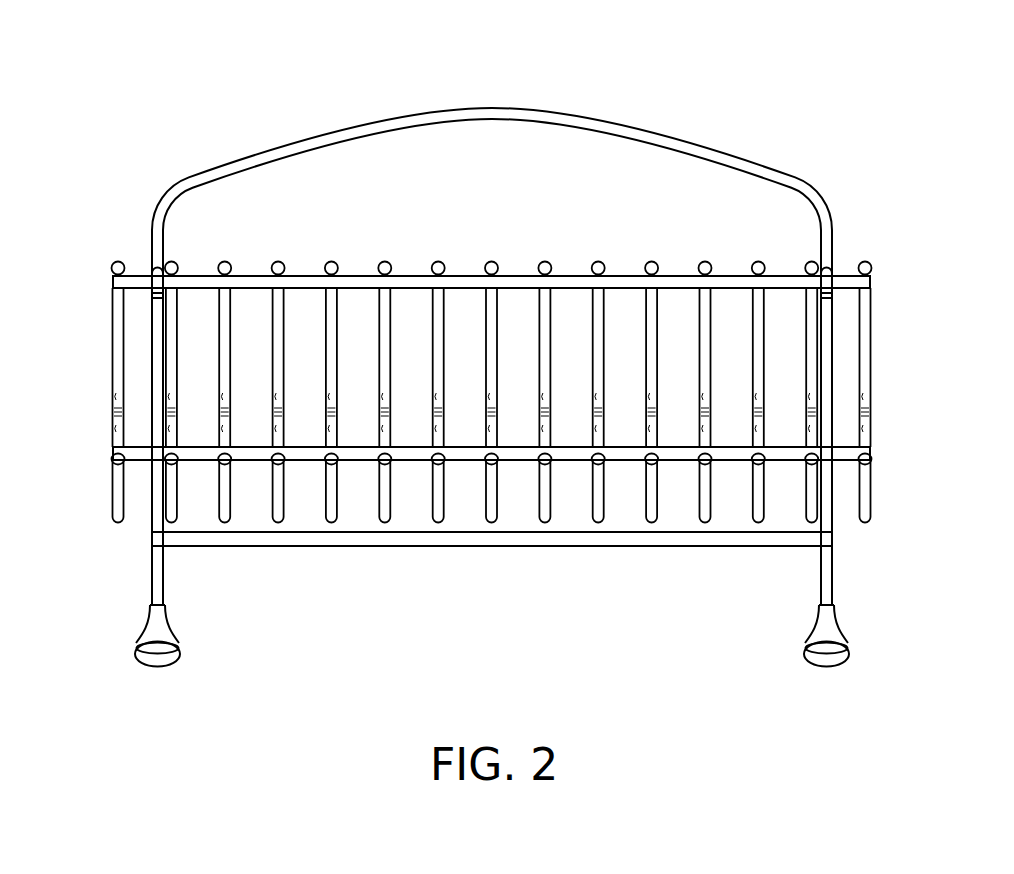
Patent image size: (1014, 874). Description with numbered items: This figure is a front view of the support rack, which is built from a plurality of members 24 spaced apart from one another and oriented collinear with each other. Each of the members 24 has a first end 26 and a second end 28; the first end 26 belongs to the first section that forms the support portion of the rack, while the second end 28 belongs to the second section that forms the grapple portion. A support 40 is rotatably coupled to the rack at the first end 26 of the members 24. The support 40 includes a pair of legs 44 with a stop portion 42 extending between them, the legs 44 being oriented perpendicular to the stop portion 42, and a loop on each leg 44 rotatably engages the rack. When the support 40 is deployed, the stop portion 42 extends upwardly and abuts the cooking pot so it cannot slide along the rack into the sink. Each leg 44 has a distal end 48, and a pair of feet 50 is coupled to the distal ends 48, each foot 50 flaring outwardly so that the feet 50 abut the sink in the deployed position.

The members 24 is at (437, 327).
The first end 26 is at (118, 262).
The second end 28 is at (115, 458).
The support 40 is at (170, 555).
The stop portion 42 is at (533, 110).
The legs 44 is at (153, 562).
The distal end 48 is at (150, 616).
The feet 50 is at (180, 655).